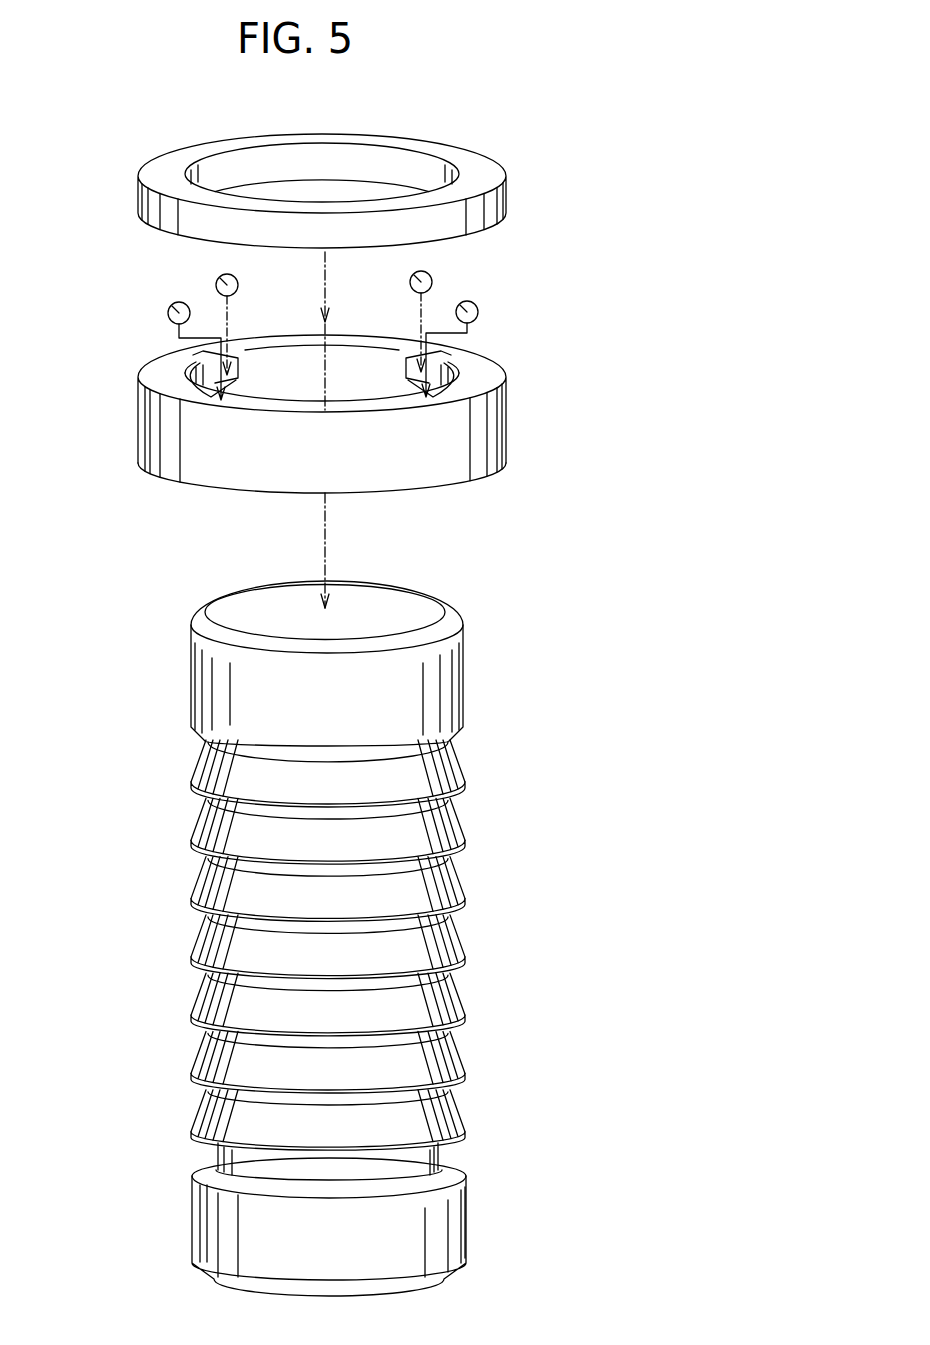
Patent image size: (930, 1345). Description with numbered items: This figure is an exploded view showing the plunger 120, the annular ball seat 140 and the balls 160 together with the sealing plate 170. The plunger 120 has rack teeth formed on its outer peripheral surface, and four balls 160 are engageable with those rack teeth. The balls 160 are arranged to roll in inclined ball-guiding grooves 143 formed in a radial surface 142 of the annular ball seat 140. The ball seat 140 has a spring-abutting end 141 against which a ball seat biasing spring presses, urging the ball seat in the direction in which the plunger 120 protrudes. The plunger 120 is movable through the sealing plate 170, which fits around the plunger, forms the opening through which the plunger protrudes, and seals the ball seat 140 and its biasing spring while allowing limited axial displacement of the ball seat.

The plunger 120 is at (463, 675).
The annular ball seat 140 is at (478, 432).
The spring-abutting end 141 is at (194, 488).
The radial surface 142 is at (240, 410).
The inclined ball-guiding grooves 143 is at (141, 374).
The balls 160 is at (216, 284).
The sealing plate 170 is at (507, 187).